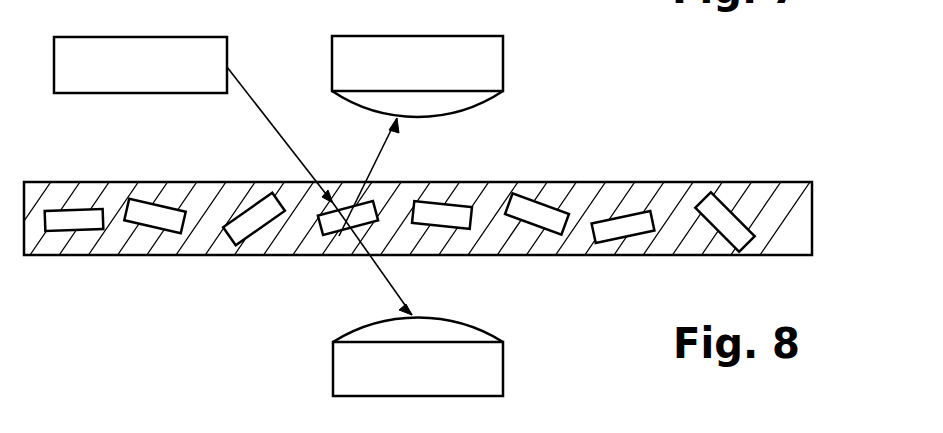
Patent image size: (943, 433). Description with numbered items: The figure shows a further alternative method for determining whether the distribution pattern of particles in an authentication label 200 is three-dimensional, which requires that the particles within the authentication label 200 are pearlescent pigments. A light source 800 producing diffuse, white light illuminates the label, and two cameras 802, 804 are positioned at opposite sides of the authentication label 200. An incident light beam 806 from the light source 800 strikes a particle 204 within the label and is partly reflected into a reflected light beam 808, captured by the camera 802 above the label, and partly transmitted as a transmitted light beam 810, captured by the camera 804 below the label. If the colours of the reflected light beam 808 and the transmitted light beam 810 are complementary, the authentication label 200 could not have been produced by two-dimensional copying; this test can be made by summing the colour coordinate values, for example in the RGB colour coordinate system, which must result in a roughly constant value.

The light source 800 is at (132, 36).
The camera 802 is at (504, 72).
The camera 804 is at (504, 365).
The authentication label 200 is at (777, 182).
The particle 204 is at (334, 228).
The incident light beam 806 is at (287, 150).
The reflected light beam 808 is at (380, 148).
The transmitted light beam 810 is at (397, 287).